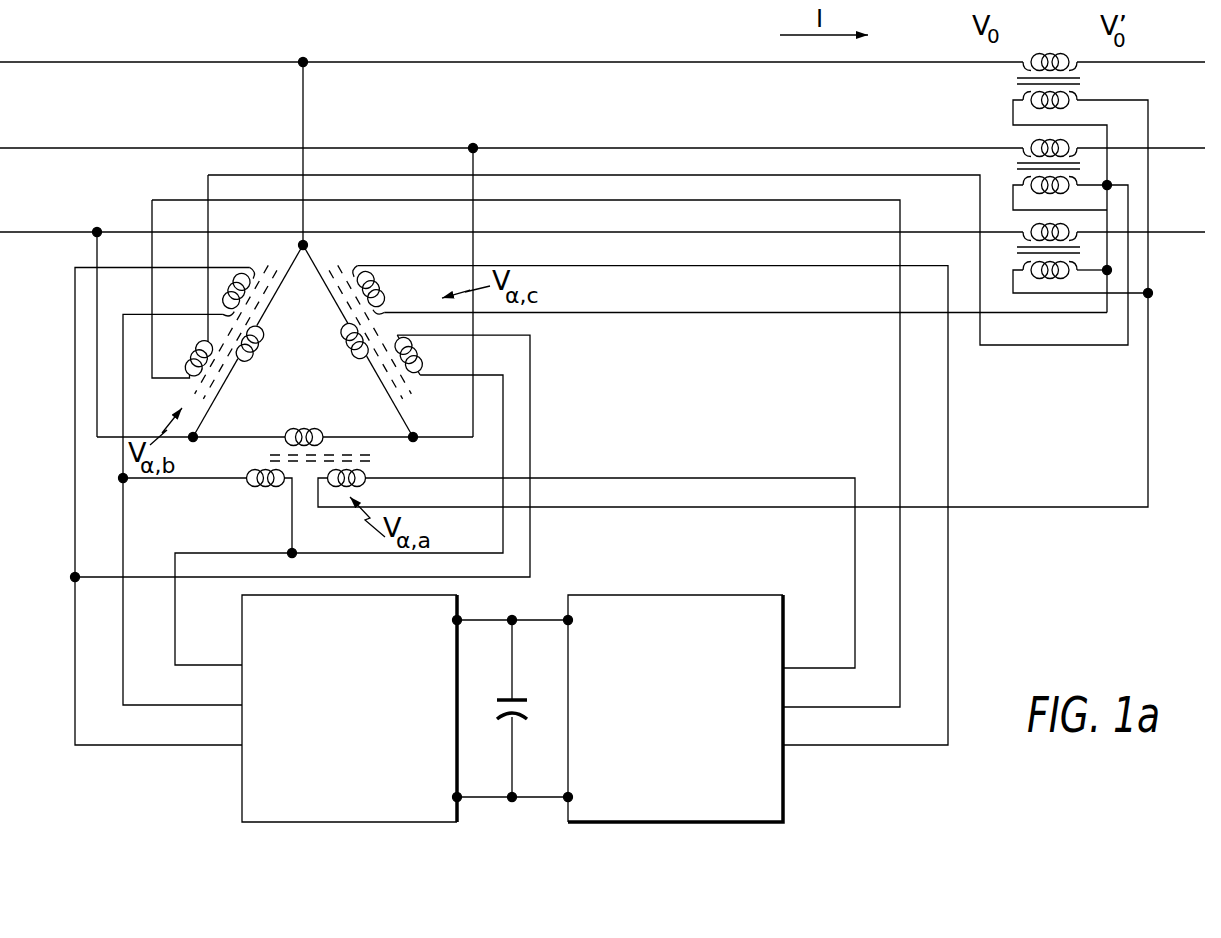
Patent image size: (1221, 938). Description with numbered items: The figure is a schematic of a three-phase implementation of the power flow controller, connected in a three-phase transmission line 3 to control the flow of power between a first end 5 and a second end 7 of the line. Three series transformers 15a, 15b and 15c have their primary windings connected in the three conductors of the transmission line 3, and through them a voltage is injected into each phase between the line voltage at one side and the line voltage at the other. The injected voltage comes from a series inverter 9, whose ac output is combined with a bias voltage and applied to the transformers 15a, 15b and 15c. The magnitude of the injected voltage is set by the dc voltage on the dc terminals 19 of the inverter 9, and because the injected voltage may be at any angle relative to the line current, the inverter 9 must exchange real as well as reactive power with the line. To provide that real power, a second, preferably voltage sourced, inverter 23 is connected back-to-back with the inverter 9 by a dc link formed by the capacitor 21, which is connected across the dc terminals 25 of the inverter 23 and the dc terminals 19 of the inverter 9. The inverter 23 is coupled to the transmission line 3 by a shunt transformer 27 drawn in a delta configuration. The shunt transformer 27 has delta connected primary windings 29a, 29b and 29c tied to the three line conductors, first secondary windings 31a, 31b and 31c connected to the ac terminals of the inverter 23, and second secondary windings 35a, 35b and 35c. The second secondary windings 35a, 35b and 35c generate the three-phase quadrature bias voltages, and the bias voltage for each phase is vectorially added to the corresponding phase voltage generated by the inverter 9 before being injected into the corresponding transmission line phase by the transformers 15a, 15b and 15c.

The transmission line 3 is at (195, 63).
The first end 5 is at (97, 63).
The second end 7 is at (1185, 62).
The inverter 9 is at (755, 593).
The transformer 15a is at (1005, 86).
The transformer 15b is at (1087, 168).
The transformer 15c is at (1087, 252).
The dc terminals 19 is at (570, 622).
The capacitor 21 is at (516, 718).
The inverter 23 is at (240, 638).
The dc terminals 25 is at (460, 618).
The shunt transformer 27 is at (310, 381).
The primary winding 29a is at (296, 430).
The primary winding 29b is at (262, 336).
The primary winding 29c is at (349, 352).
The first secondary winding 31a is at (263, 485).
The first secondary winding 31b is at (233, 266).
The first secondary winding 31c is at (432, 348).
The second secondary winding 35a is at (383, 485).
The second secondary winding 35b is at (208, 340).
The second secondary winding 35c is at (380, 278).